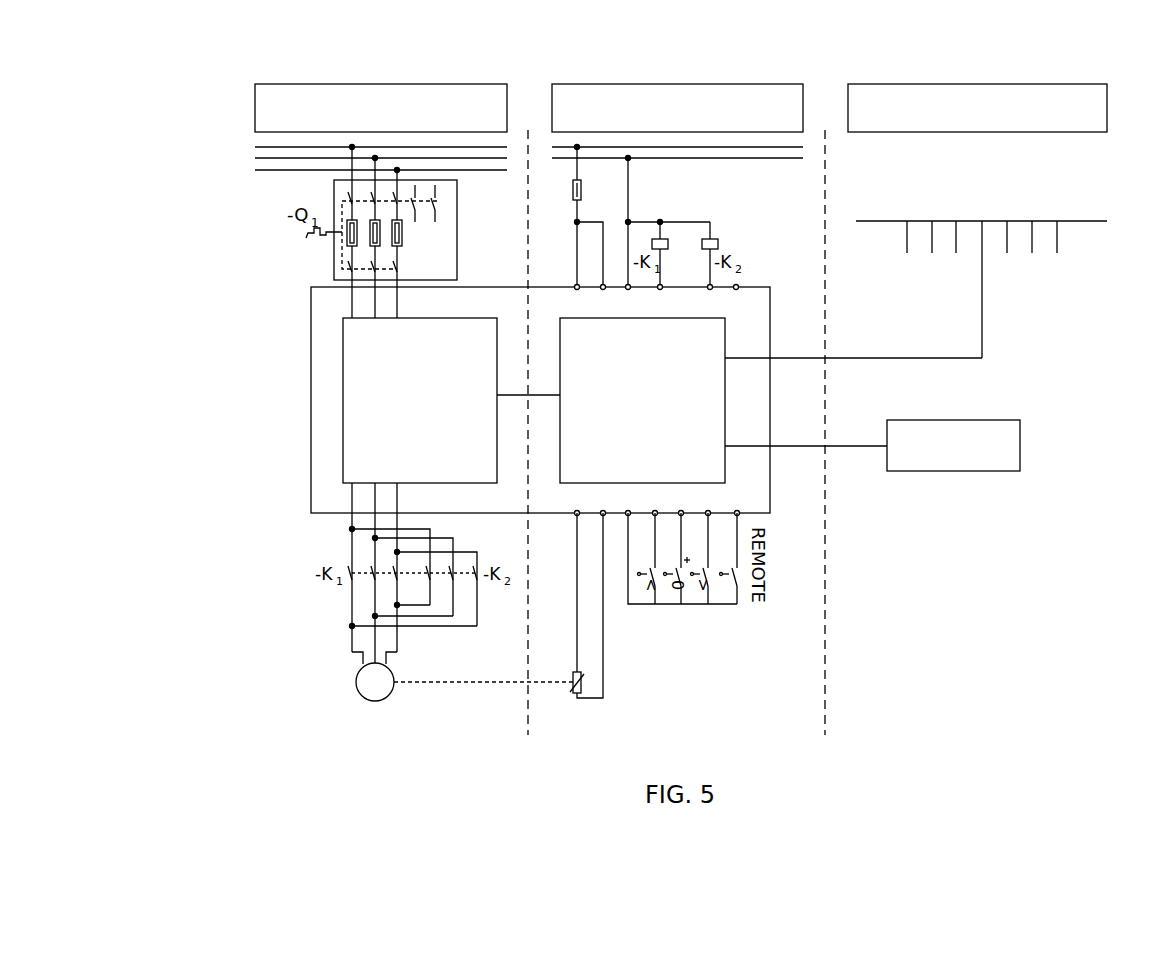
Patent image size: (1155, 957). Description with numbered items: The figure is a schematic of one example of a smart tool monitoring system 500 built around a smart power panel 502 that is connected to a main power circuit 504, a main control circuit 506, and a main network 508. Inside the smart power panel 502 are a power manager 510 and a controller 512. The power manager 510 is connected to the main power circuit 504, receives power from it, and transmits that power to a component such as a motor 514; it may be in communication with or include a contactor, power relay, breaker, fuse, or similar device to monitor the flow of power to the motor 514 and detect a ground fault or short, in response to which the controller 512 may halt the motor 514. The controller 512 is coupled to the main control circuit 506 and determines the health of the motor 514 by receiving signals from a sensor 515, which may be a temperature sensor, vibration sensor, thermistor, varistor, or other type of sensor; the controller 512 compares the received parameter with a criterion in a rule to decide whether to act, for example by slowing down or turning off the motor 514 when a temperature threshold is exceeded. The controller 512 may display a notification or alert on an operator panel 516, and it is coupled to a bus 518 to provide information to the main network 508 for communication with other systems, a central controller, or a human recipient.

The smart tool monitoring system 500 is at (195, 72).
The smart power panel 502 is at (311, 372).
The main power circuit 504 is at (380, 84).
The main control circuit 506 is at (676, 84).
The main network 508 is at (988, 84).
The power manager 510 is at (497, 470).
The controller 512 is at (560, 342).
The motor 514 is at (361, 692).
The sensor 515 is at (571, 695).
The operator panel 516 is at (1020, 450).
The bus 518 is at (1069, 221).